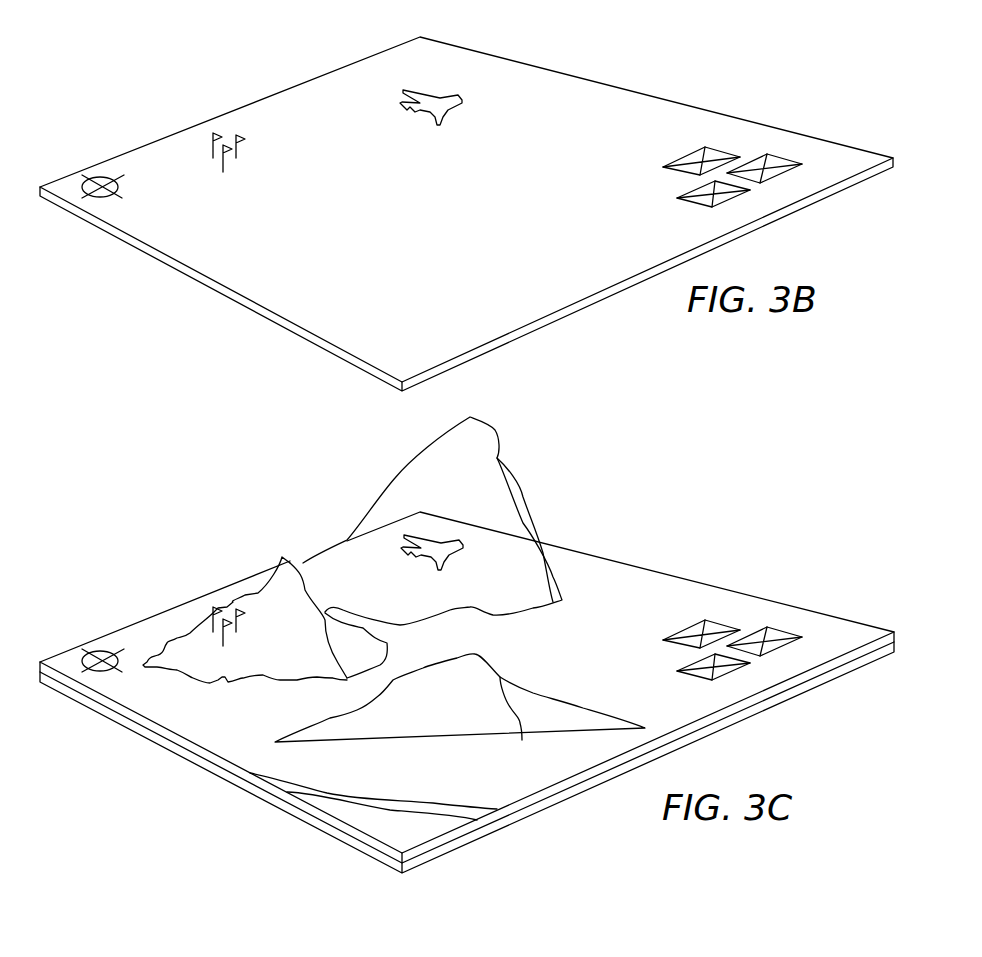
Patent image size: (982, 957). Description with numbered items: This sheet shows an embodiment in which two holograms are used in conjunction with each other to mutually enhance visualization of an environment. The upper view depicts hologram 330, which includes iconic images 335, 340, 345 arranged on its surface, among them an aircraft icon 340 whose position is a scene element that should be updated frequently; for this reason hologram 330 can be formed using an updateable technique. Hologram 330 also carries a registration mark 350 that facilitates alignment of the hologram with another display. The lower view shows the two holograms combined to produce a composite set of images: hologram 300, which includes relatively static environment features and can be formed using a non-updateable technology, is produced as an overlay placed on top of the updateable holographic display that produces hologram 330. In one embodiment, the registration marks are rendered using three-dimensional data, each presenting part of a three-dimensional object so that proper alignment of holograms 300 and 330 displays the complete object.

In FIG. 3C, the hologram 300 is at (848, 673).
In FIG. 3B, the hologram 330 is at (832, 157).
In FIG. 3C, the hologram 330 is at (847, 630).
In FIG. 3B, the iconic image 335 is at (722, 147).
In FIG. 3B, the aircraft icon 340 is at (425, 122).
In FIG. 3B, the iconic image 345 is at (212, 133).
In FIG. 3B, the registration mark 350 is at (90, 150).